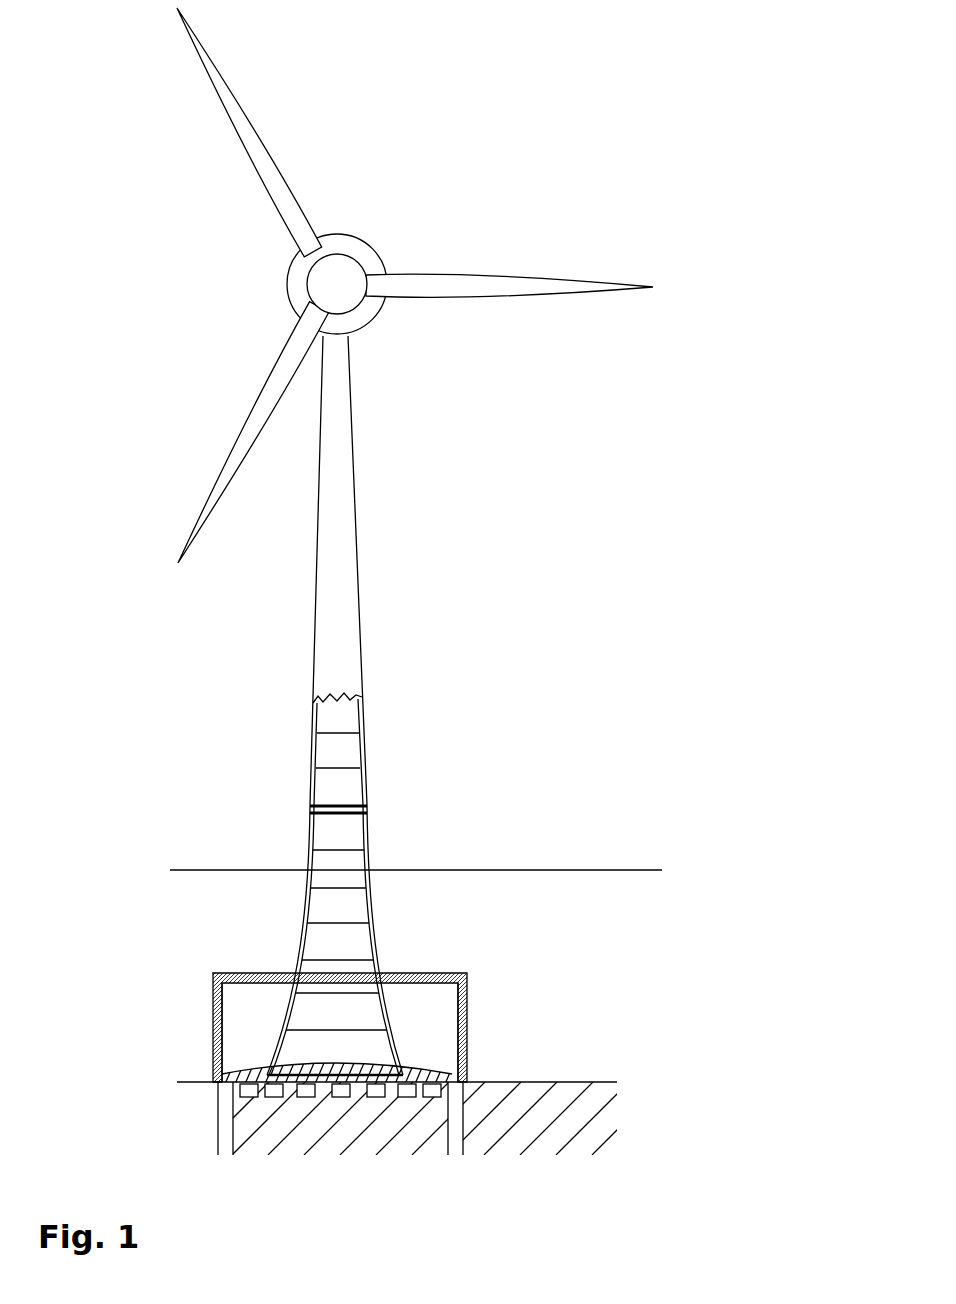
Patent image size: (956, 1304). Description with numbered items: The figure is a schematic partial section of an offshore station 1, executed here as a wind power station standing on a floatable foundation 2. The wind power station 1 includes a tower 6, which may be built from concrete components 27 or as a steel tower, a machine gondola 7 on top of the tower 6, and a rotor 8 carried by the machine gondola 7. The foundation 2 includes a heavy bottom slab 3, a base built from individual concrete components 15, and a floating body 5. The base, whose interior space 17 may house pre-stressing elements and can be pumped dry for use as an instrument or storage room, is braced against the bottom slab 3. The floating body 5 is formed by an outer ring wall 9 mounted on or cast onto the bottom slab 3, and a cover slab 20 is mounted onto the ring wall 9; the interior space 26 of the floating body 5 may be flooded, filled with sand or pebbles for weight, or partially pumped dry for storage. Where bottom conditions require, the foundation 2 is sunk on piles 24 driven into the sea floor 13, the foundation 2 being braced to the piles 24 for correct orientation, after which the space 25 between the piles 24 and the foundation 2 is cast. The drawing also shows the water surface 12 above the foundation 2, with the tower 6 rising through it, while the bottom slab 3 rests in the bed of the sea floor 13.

The offshore station 1 is at (461, 210).
The foundation 2 is at (391, 957).
The bottom slab 3 is at (214, 1078).
The floating body 5 is at (218, 1006).
The tower 6 is at (345, 477).
The machine gondola 7 is at (340, 243).
The rotor 8 is at (524, 287).
The outer ring wall 9 is at (466, 1010).
The water surface 12 is at (542, 870).
The sea floor 13 is at (568, 1082).
The concrete components 15 is at (322, 944).
The interior space 17 is at (350, 928).
The cover slab 20 is at (253, 976).
The piles 24 is at (228, 1122).
The space 25 is at (460, 1081).
The interior space 26 is at (243, 1052).
The concrete components 27 is at (352, 758).